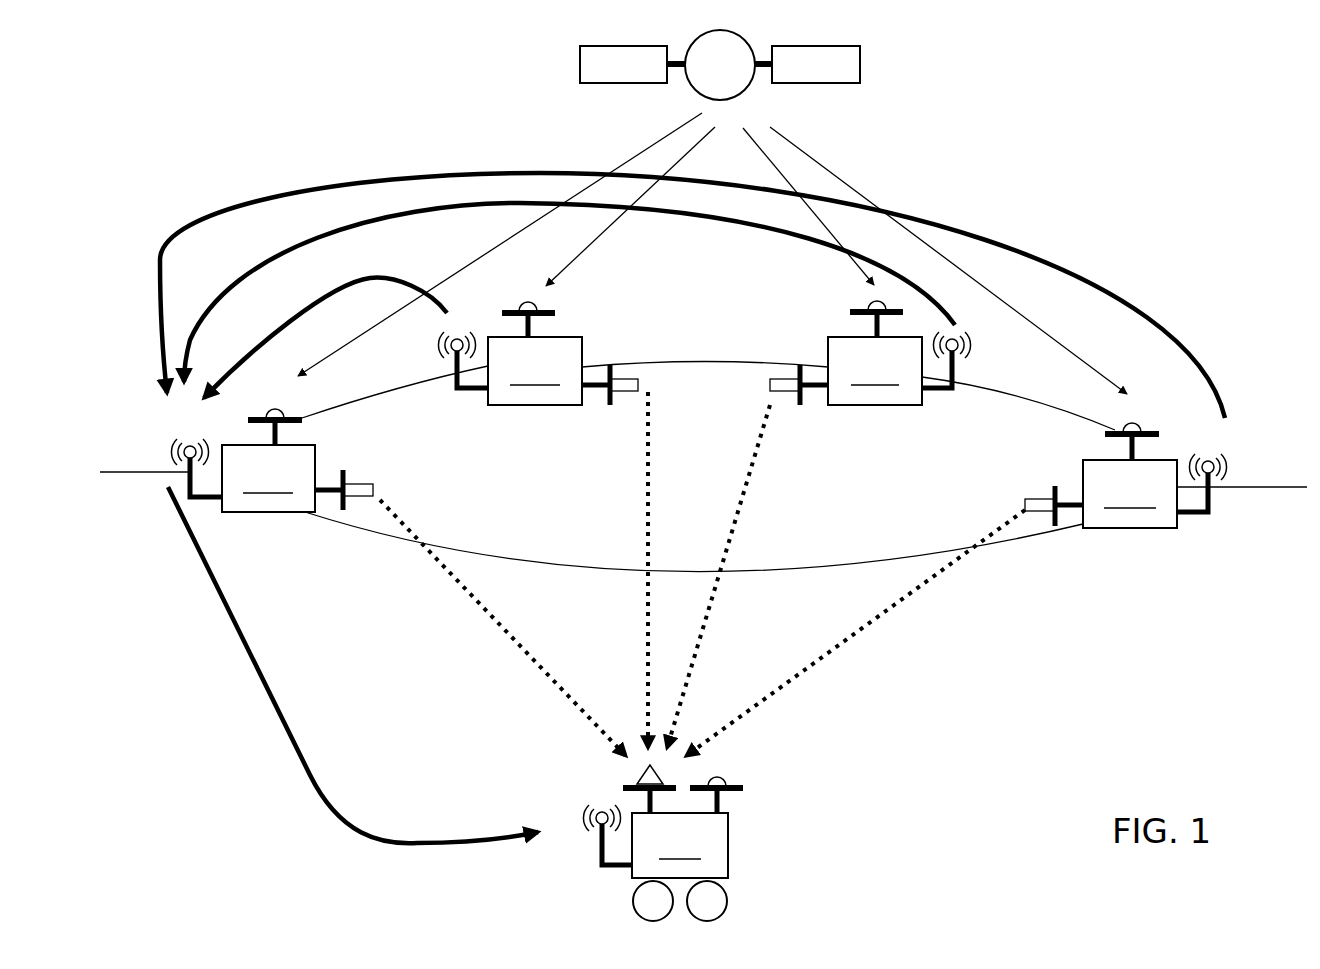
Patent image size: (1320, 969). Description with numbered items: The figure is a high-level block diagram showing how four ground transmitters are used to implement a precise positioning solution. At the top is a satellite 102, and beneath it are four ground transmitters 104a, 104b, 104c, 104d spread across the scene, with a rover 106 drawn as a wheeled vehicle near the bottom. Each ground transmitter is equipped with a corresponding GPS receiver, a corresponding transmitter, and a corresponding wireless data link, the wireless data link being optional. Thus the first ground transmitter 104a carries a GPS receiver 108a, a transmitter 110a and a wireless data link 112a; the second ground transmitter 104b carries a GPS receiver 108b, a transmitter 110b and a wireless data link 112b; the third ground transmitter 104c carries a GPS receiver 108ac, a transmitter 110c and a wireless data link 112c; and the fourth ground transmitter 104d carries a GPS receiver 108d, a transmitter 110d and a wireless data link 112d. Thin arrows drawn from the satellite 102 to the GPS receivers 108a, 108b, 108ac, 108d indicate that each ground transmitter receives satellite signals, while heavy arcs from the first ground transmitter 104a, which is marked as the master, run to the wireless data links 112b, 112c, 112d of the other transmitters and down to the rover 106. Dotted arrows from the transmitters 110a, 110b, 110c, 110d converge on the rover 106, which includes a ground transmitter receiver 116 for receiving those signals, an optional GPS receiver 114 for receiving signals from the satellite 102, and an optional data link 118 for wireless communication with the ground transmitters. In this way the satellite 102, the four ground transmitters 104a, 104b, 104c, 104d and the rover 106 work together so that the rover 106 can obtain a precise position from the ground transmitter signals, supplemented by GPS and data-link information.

The satellite 102 is at (699, 78).
The ground transmitter 104a is at (273, 497).
The ground transmitter 104b is at (535, 371).
The ground transmitter 104c is at (875, 371).
The ground transmitter 104d is at (1130, 494).
The rover 106 is at (680, 867).
The GPS receiver 108a is at (312, 422).
The GPS receiver 108b is at (557, 303).
The GPS receiver 108ac is at (845, 300).
The GPS receiver 108d is at (1192, 402).
The transmitter 110a is at (378, 490).
The transmitter 110b is at (682, 366).
The transmitter 110c is at (778, 396).
The transmitter 110d is at (1025, 497).
The wireless data link 112a is at (167, 443).
The wireless data link 112b is at (447, 332).
The wireless data link 112c is at (971, 328).
The wireless data link 112d is at (1225, 455).
The GPS receiver 114 is at (745, 788).
The ground transmitter receiver 116 is at (625, 785).
The data link 118 is at (575, 811).